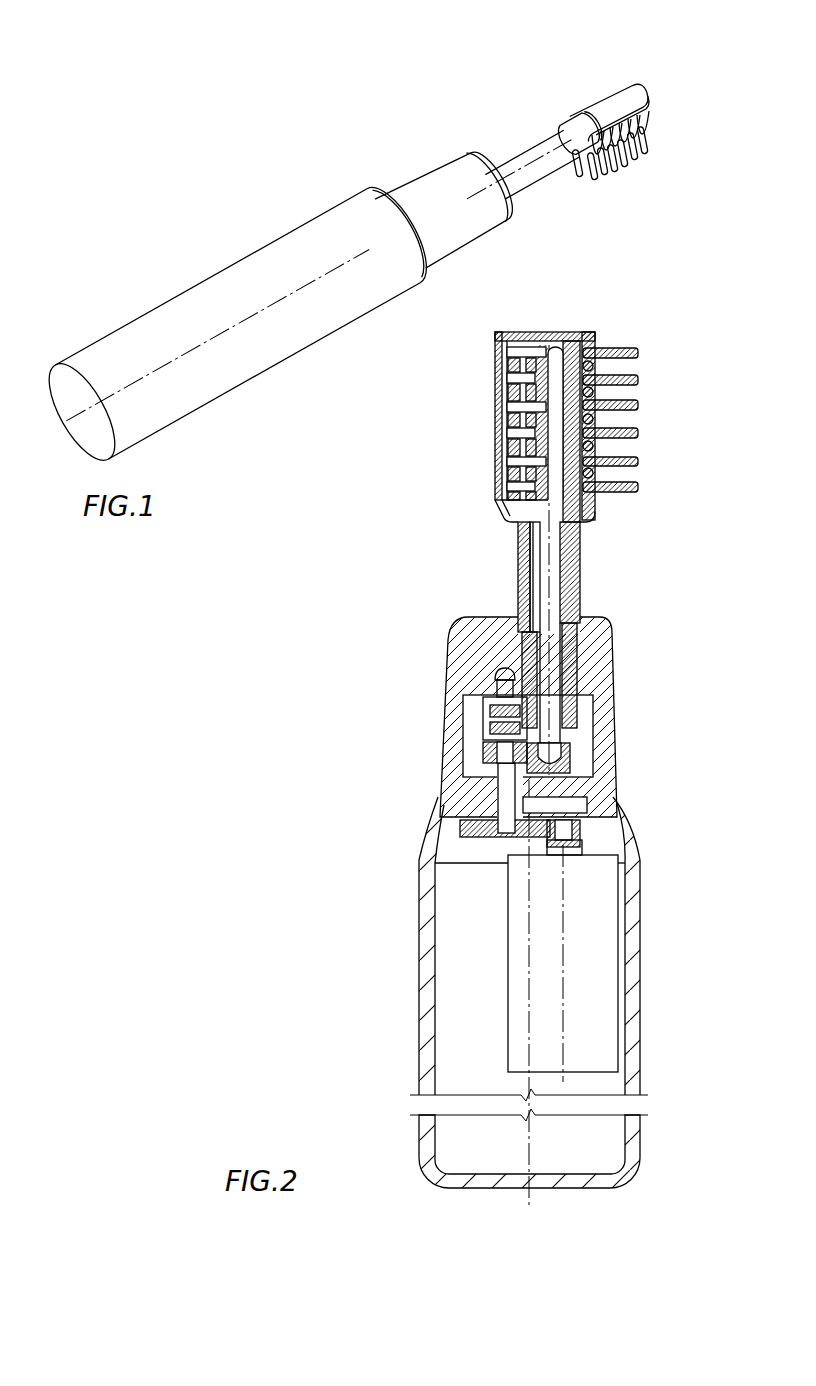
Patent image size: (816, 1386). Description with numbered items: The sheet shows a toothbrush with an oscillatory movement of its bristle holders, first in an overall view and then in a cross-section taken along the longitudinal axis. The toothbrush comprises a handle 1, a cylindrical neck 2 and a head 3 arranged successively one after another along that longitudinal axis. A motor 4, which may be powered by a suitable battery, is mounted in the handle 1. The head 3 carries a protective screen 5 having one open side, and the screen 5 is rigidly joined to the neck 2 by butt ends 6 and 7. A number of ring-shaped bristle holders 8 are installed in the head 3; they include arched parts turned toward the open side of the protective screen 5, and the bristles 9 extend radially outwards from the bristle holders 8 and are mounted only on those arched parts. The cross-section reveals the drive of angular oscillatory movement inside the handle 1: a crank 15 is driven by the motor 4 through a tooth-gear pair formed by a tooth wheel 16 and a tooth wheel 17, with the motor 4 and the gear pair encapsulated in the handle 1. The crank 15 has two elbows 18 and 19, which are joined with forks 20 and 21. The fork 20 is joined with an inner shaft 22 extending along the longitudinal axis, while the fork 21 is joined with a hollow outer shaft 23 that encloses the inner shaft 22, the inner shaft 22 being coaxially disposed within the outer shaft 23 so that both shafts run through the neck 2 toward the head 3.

In FIG. 1, the handle 1 is at (281, 299).
In FIG. 2, the handle 1 is at (427, 1077).
In FIG. 1, the cylindrical neck 2 is at (521, 172).
In FIG. 2, the cylindrical neck 2 is at (527, 577).
In FIG. 1, the head 3 is at (604, 117).
In FIG. 2, the head 3 is at (536, 398).
In FIG. 2, the motor 4 is at (543, 1032).
In FIG. 1, the protective screen 5 is at (612, 110).
In FIG. 2, the protective screen 5 is at (498, 368).
In FIG. 1, the butt end 6 is at (580, 132).
In FIG. 2, the butt end 6 is at (500, 517).
In FIG. 2, the butt end 7 is at (542, 334).
In FIG. 1, the ring-shaped bristle holder 8 is at (622, 116).
In FIG. 2, the ring-shaped bristle holder 8 is at (587, 368).
In FIG. 1, the bristle 9 is at (642, 155).
In FIG. 2, the bristle 9 is at (612, 350).
In FIG. 2, the crank 15 is at (497, 735).
In FIG. 2, the tooth wheel 16 is at (577, 832).
In FIG. 2, the tooth wheel 17 is at (478, 828).
In FIG. 2, the elbow 18 is at (517, 753).
In FIG. 2, the elbow 19 is at (495, 718).
In FIG. 2, the fork 20 is at (567, 753).
In FIG. 2, the fork 21 is at (572, 717).
In FIG. 2, the inner shaft 22 is at (550, 635).
In FIG. 2, the hollow outer shaft 23 is at (567, 588).